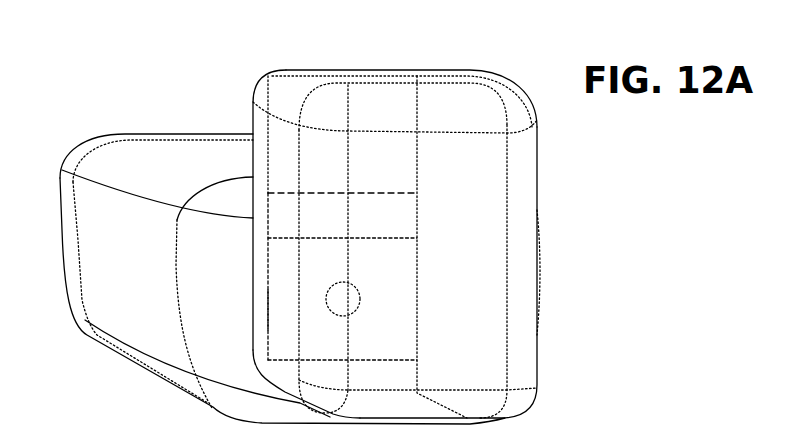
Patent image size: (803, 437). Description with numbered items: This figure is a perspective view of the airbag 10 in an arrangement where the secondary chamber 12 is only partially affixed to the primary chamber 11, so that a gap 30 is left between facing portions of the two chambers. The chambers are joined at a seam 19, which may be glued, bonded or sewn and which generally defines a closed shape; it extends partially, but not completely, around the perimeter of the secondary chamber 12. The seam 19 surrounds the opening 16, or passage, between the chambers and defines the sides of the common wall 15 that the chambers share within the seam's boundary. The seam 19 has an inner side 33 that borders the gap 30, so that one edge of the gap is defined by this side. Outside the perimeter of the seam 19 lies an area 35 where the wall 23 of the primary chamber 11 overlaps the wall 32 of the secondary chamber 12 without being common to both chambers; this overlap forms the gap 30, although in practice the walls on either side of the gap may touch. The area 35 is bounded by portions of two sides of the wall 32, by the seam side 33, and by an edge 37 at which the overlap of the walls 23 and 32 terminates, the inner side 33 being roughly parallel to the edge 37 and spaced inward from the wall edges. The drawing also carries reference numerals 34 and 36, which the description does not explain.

The airbag 10 is at (158, 68).
The primary chamber 11 is at (133, 288).
The secondary chamber 12 is at (487, 169).
The common wall 15 is at (402, 323).
The opening 16 is at (372, 306).
The seam 19 is at (270, 297).
The wall of the primary chamber 23 is at (372, 338).
The gap 30 is at (247, 237).
The wall of the secondary chamber 32 is at (243, 104).
The inner side of the seam 33 is at (387, 236).
The top surface 34 is at (207, 149).
The area 35 is at (397, 191).
The top edge 36 is at (370, 80).
The edge 37 is at (246, 164).